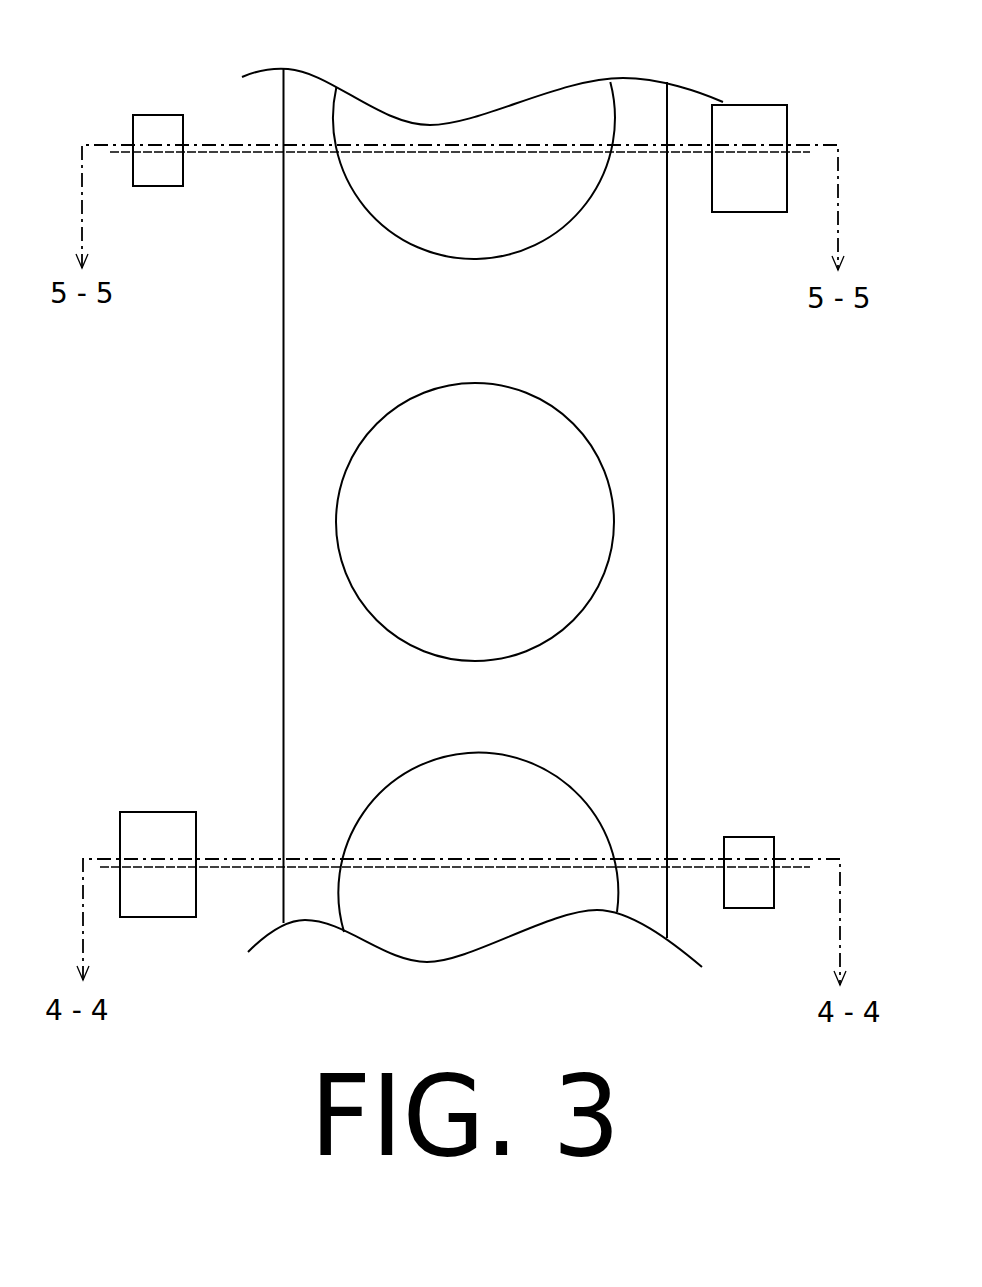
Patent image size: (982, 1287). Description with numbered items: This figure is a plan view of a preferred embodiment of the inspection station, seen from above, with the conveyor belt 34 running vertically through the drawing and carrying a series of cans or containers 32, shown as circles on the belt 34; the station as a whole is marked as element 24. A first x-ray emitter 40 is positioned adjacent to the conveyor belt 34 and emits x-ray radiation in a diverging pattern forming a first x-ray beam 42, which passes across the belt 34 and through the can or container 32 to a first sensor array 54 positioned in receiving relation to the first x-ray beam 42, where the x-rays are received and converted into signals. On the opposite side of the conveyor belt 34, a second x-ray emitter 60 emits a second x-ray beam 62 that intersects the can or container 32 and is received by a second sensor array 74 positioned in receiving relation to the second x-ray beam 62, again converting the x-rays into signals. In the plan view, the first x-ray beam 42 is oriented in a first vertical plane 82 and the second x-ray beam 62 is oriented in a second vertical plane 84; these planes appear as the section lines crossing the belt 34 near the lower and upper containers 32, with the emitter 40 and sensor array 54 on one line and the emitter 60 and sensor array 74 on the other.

The belt 24 is at (472, 47).
The can or container 32 is at (617, 518).
The conveyor belt 34 is at (642, 745).
The first x-ray emitter 40 is at (752, 837).
The first x-ray beam 42 is at (678, 872).
The first sensor array 54 is at (157, 917).
The second x-ray emitter 60 is at (157, 113).
The second x-ray beam 62 is at (240, 157).
The second sensor array 74 is at (755, 212).
The first vertical plane 82 is at (790, 870).
The second vertical plane 84 is at (122, 153).